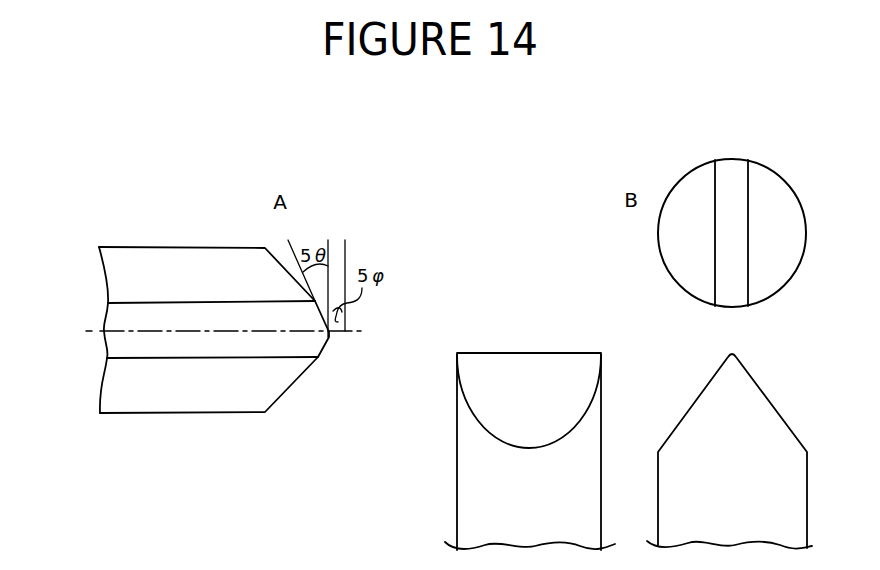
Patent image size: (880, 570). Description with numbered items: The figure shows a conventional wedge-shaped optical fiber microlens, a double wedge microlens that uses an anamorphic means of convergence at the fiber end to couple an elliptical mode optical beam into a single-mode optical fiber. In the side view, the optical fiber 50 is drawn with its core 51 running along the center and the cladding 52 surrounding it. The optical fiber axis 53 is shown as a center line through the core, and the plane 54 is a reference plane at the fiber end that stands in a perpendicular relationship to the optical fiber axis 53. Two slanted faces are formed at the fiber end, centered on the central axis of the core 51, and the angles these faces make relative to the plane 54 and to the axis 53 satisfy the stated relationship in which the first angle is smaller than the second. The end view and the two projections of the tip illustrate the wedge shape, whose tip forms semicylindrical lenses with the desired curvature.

The optical fiber 50 is at (107, 246).
The core 51 is at (110, 313).
The cladding 52 is at (111, 268).
The optical fiber axis 53 is at (132, 332).
The plane 54 is at (347, 252).